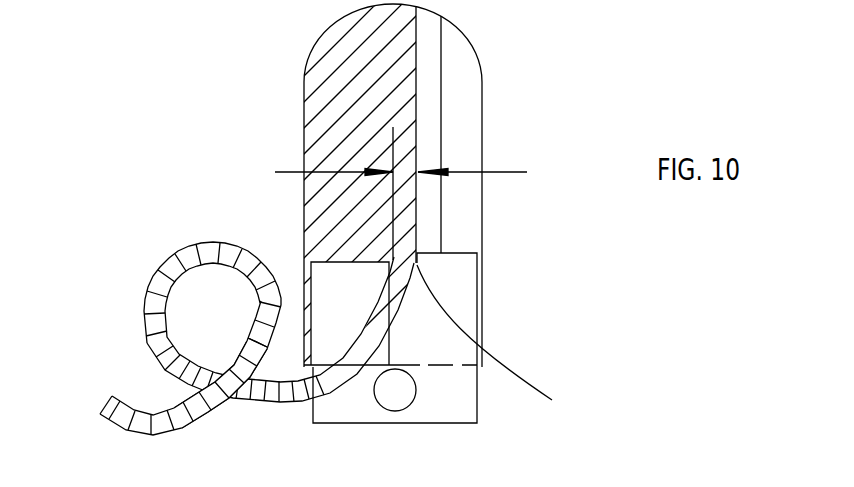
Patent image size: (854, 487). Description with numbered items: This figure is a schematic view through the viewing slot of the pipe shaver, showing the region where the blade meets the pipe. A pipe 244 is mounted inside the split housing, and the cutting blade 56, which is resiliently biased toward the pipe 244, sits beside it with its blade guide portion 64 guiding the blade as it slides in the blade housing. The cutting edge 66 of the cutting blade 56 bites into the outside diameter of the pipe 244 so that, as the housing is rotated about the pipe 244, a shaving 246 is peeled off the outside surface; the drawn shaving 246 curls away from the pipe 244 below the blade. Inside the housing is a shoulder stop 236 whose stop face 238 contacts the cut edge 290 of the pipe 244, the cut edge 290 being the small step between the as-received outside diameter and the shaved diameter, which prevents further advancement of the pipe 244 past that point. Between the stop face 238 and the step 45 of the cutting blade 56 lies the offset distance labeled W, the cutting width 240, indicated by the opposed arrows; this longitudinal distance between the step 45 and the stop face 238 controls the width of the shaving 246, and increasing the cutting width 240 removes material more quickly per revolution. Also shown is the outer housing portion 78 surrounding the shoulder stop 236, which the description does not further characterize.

The pipe 244 is at (347, 50).
The stop face 238 is at (402, 98).
The shoulder stop 236 is at (423, 47).
The outer housing 78 is at (465, 92).
The cut edge 290 is at (417, 132).
The cutting width 240 is at (503, 175).
The blade guide portion 64 is at (335, 265).
The shaving 246 is at (187, 253).
The cutting edge 66 is at (460, 253).
The step 45 is at (504, 341).
The cutting blade 56 is at (413, 405).